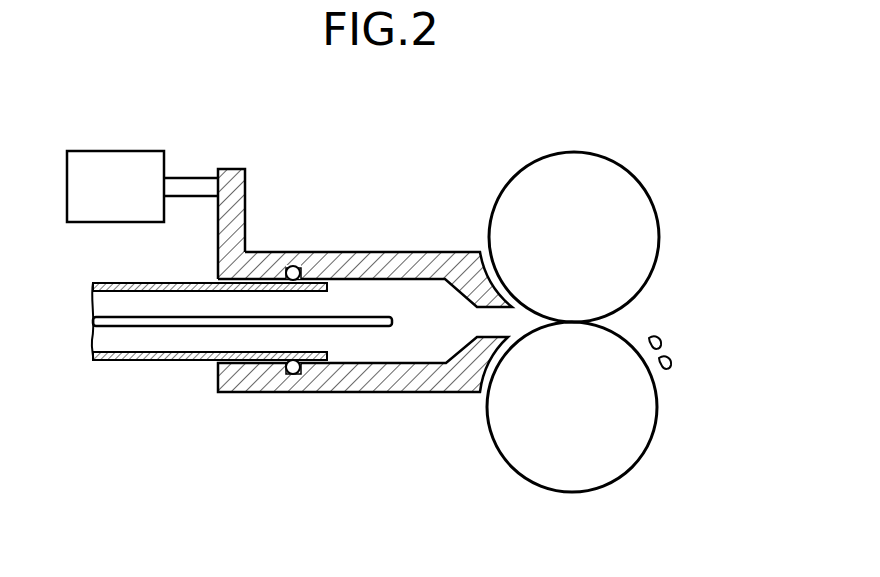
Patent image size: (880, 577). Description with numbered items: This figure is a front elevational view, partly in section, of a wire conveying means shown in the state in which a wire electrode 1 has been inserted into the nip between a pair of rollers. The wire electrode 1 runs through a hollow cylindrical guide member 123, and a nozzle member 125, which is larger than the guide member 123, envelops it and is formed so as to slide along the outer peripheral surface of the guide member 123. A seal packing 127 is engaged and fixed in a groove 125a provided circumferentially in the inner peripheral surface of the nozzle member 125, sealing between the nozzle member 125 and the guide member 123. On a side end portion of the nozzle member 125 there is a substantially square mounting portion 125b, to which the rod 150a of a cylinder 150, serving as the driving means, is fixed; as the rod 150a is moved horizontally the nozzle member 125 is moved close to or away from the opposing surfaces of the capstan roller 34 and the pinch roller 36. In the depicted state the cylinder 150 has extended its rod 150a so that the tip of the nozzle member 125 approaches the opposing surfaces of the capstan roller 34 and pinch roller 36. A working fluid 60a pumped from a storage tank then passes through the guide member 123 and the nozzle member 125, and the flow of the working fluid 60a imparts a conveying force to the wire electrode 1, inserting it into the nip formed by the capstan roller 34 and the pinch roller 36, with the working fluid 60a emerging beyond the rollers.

The wire electrode 1 is at (117, 328).
The capstan roller 34 is at (572, 151).
The pinch roller 36 is at (568, 493).
The working fluid 60a is at (671, 352).
The guide member 123 is at (172, 361).
The nozzle member 125 is at (407, 251).
The groove 125a is at (303, 370).
The mounting portion 125b is at (247, 172).
The seal packing 127 is at (301, 252).
The cylinder 150 is at (123, 150).
The rod 150a is at (198, 177).